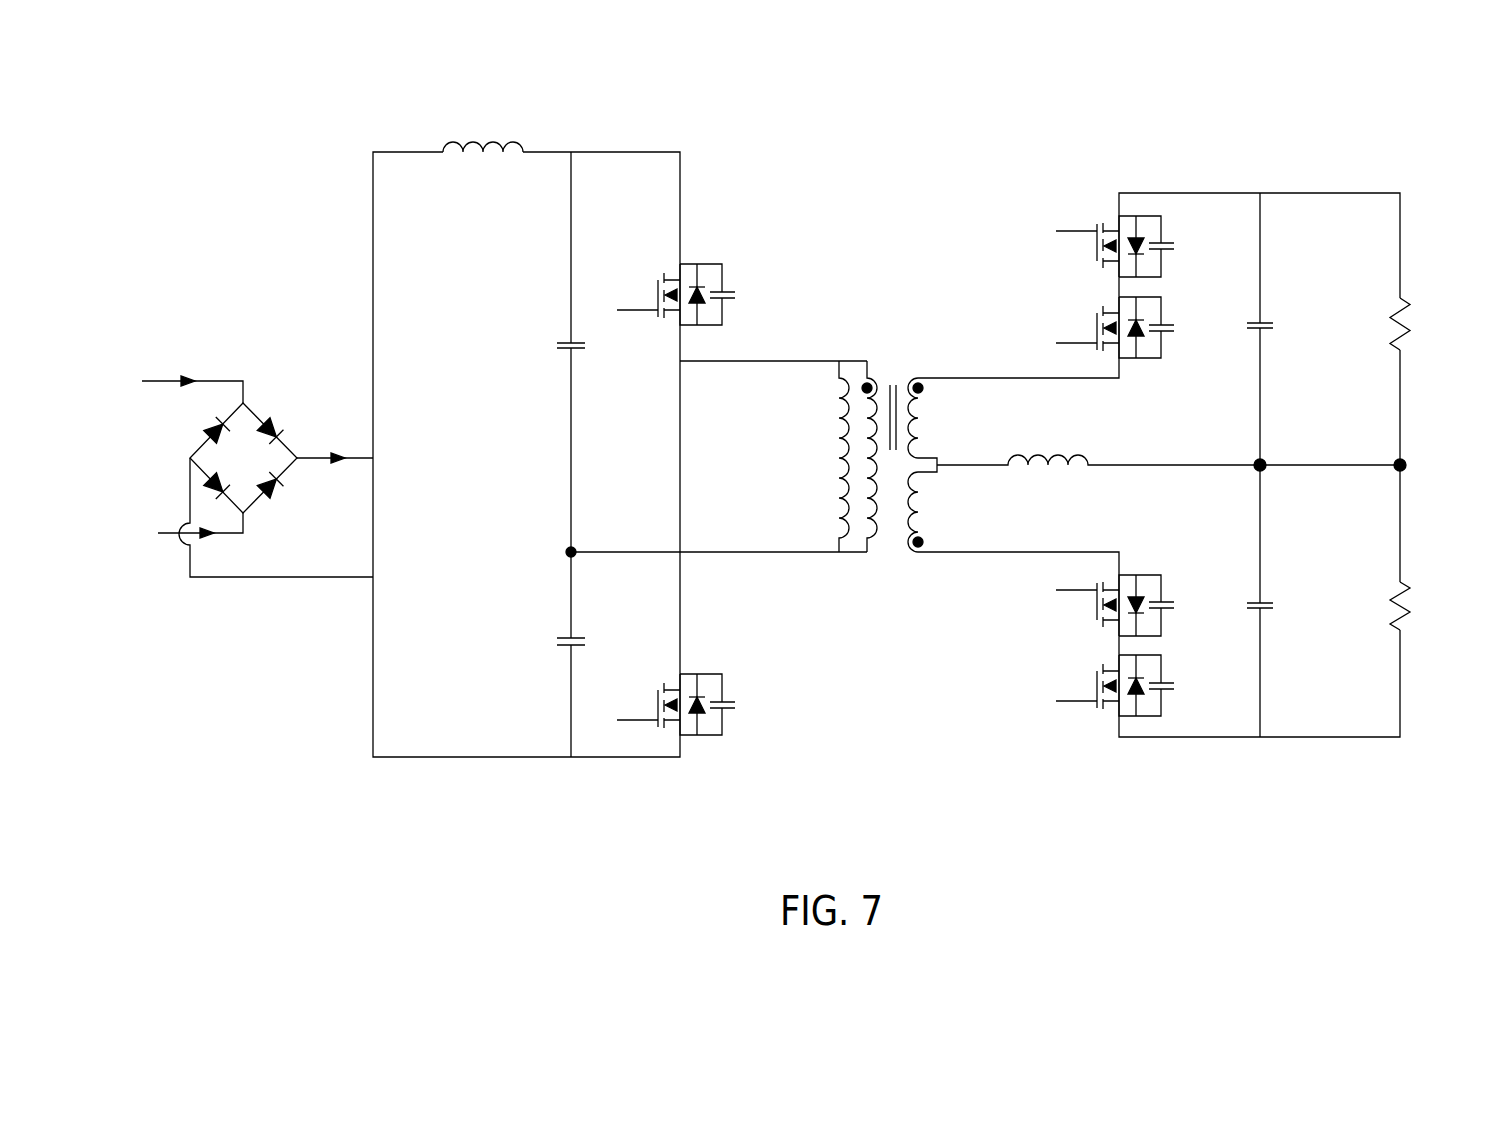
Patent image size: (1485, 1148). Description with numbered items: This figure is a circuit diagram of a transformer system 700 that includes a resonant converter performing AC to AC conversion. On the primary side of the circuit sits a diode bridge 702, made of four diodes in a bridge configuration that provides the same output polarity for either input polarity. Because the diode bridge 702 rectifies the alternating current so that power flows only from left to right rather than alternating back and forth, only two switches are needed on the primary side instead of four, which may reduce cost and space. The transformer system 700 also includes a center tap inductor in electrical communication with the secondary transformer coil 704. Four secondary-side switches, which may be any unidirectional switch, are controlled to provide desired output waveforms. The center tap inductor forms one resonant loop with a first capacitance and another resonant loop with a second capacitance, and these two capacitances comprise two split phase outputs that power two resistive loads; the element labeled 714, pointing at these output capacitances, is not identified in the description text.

The transformer system 700 is at (1361, 139).
The diode bridge 702 is at (193, 612).
The secondary transformer coil 704 is at (922, 362).
The resonant capacitor 714 is at (1230, 271).